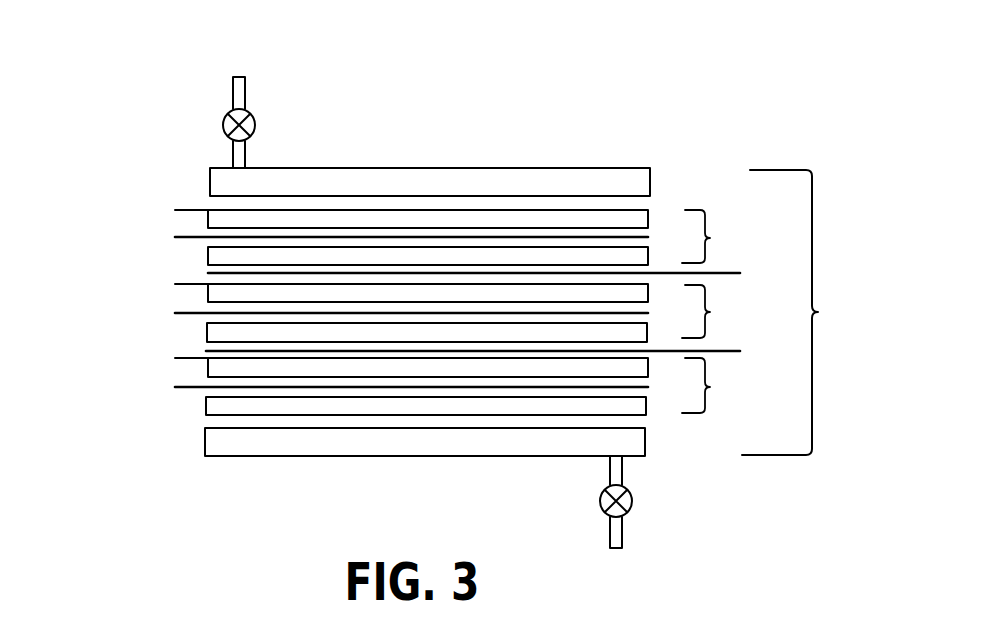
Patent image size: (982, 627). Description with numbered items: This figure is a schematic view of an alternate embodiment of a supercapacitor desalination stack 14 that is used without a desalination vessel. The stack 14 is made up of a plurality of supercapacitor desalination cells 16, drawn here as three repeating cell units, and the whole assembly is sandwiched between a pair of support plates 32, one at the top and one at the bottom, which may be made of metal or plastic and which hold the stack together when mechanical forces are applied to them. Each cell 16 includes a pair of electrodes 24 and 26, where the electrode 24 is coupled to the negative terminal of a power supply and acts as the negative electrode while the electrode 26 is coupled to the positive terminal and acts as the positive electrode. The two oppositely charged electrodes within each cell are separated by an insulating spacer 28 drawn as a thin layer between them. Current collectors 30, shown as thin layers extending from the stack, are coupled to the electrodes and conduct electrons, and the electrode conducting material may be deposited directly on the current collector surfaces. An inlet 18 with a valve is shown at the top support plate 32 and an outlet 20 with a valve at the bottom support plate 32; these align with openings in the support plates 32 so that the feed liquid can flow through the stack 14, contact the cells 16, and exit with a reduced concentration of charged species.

The supercapacitor desalination stack 14 is at (818, 312).
The supercapacitor desalination cell 16 is at (710, 238).
The inlet 18 is at (243, 97).
The outlet 20 is at (610, 535).
The electrode 24 is at (208, 219).
The electrode 26 is at (208, 256).
The electrolyte membrane layer 28 is at (176, 238).
The current collector 30 is at (492, 310).
The support plate 32 is at (469, 172).